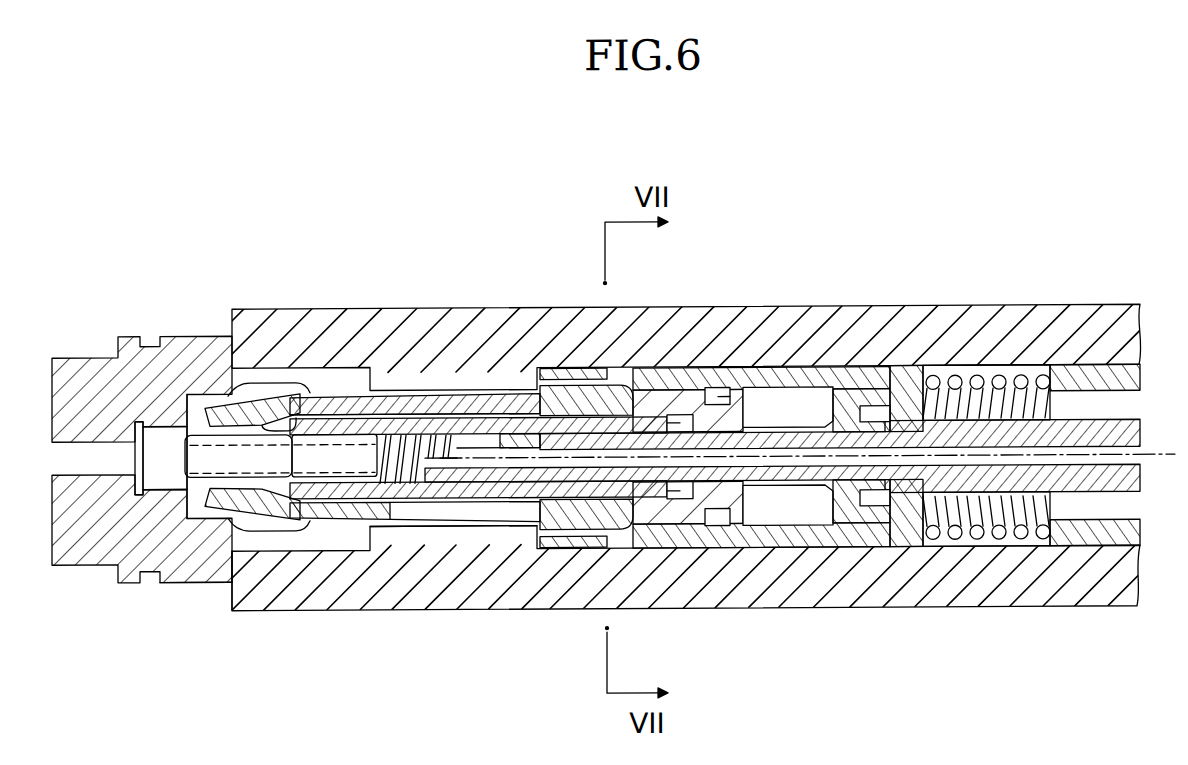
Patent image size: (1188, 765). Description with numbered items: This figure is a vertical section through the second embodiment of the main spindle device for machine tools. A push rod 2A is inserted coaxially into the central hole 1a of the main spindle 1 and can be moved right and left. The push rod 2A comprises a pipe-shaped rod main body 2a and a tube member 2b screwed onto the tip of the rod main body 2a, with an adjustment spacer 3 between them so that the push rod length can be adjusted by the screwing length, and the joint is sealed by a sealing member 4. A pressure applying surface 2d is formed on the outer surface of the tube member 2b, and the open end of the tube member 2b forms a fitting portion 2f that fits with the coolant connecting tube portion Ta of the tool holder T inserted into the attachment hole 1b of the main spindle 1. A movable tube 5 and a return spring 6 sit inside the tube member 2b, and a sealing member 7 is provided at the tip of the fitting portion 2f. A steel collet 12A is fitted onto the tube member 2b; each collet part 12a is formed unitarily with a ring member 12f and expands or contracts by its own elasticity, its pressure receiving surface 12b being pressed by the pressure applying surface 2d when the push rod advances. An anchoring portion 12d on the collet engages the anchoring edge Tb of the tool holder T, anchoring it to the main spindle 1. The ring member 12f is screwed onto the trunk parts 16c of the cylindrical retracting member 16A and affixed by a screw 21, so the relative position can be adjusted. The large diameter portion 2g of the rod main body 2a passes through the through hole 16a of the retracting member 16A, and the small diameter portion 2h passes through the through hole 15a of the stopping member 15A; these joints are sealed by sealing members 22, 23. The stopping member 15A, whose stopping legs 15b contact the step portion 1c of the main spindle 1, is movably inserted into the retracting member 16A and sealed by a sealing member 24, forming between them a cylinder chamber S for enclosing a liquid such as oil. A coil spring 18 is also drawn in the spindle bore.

The main spindle 1 is at (1113, 307).
The central hole 1a is at (1005, 322).
The attachment hole 1b is at (222, 581).
The step portion 1c is at (517, 530).
The push rod 2A is at (1126, 421).
The rod main body 2a is at (1130, 496).
The tube member 2b is at (384, 396).
The pressure applying surface 2d is at (205, 581).
The fitting portion 2f is at (262, 462).
The large diameter portion 2g is at (853, 528).
The small diameter portion 2h is at (807, 528).
The adjustment spacer 3 is at (497, 432).
The sealing member 4 is at (645, 395).
The movable tube 5 is at (331, 468).
The return spring 6 is at (420, 470).
The sealing member 7 is at (258, 381).
The steel collet 12A is at (420, 396).
The collet part 12a is at (123, 573).
The pressure receiving surface 12b is at (272, 520).
The anchoring portion 12d is at (333, 396).
The ring member 12f is at (582, 522).
The stopping member 15A is at (683, 526).
The through hole 15a is at (753, 522).
The stopping leg 15b is at (640, 526).
The retracting member 16A is at (873, 409).
The through hole 16a is at (947, 547).
The trunk part 16c is at (545, 395).
The return spring 18 is at (1017, 530).
The screw 21 is at (580, 372).
The sealing member 22 is at (922, 375).
The sealing member 23 is at (682, 414).
The sealing member 24 is at (717, 390).
The cylinder chamber S is at (789, 395).
The tool holder T is at (73, 355).
The coolant connecting tube portion Ta is at (205, 453).
The anchoring edge Tb is at (305, 382).